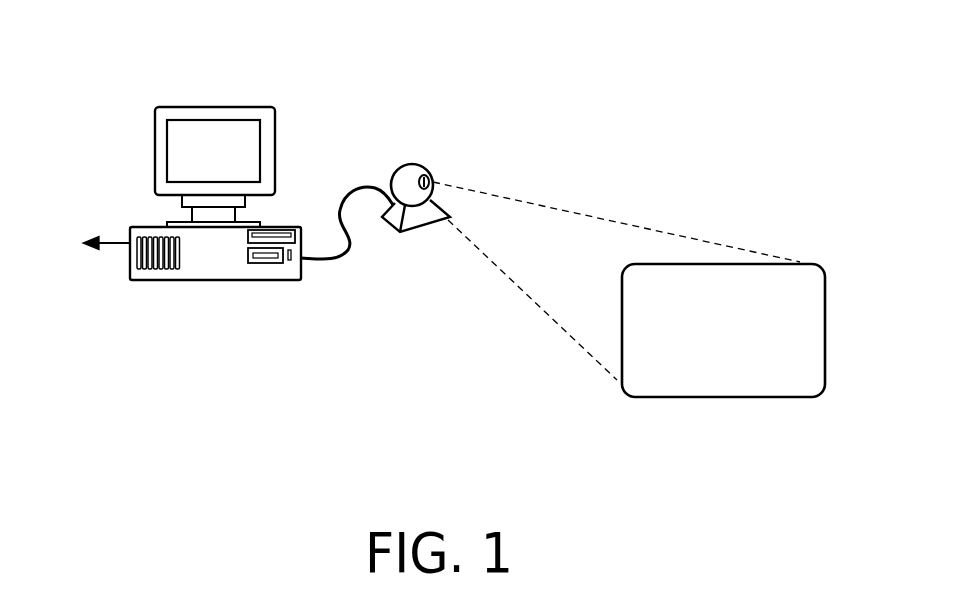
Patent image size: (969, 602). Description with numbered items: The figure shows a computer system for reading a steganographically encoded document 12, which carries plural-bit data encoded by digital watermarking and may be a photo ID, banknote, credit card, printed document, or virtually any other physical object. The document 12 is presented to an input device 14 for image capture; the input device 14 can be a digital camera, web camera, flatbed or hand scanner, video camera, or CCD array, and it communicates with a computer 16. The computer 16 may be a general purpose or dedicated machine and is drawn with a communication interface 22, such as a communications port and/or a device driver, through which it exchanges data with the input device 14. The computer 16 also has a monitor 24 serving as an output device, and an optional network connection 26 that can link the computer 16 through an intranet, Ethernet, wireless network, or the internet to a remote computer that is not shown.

The document 12 is at (825, 323).
The input device 14 is at (415, 165).
The computer 16 is at (120, 99).
The communication interface 22 is at (297, 280).
The monitor 24 is at (260, 125).
The network connection 26 is at (85, 243).